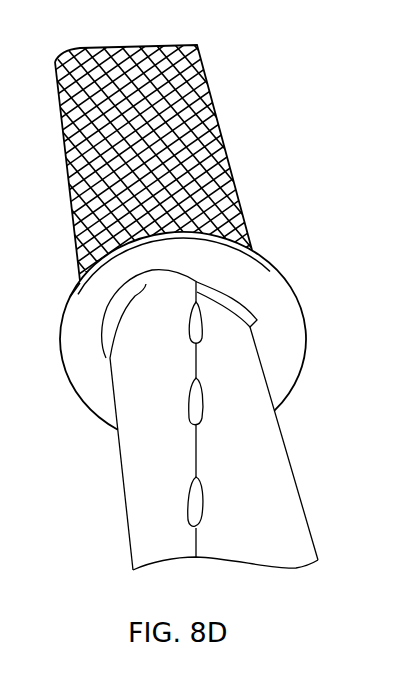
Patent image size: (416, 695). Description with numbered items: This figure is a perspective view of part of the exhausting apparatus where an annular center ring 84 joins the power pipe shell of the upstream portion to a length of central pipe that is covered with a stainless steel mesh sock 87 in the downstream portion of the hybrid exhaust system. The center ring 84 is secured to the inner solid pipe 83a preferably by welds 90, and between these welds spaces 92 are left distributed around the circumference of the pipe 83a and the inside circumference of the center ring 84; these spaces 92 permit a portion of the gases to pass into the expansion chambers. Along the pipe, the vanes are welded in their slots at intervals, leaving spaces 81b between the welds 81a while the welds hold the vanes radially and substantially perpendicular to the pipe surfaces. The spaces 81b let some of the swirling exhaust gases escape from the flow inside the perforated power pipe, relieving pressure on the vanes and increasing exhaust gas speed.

The stainless steel mesh sock 87 is at (214, 105).
The center ring 84 is at (255, 246).
The spaces 92 is at (70, 295).
The welds 90 is at (248, 303).
The inner solid pipe 83a is at (315, 532).
The welds 81a is at (196, 405).
The spaces 81b is at (196, 458).